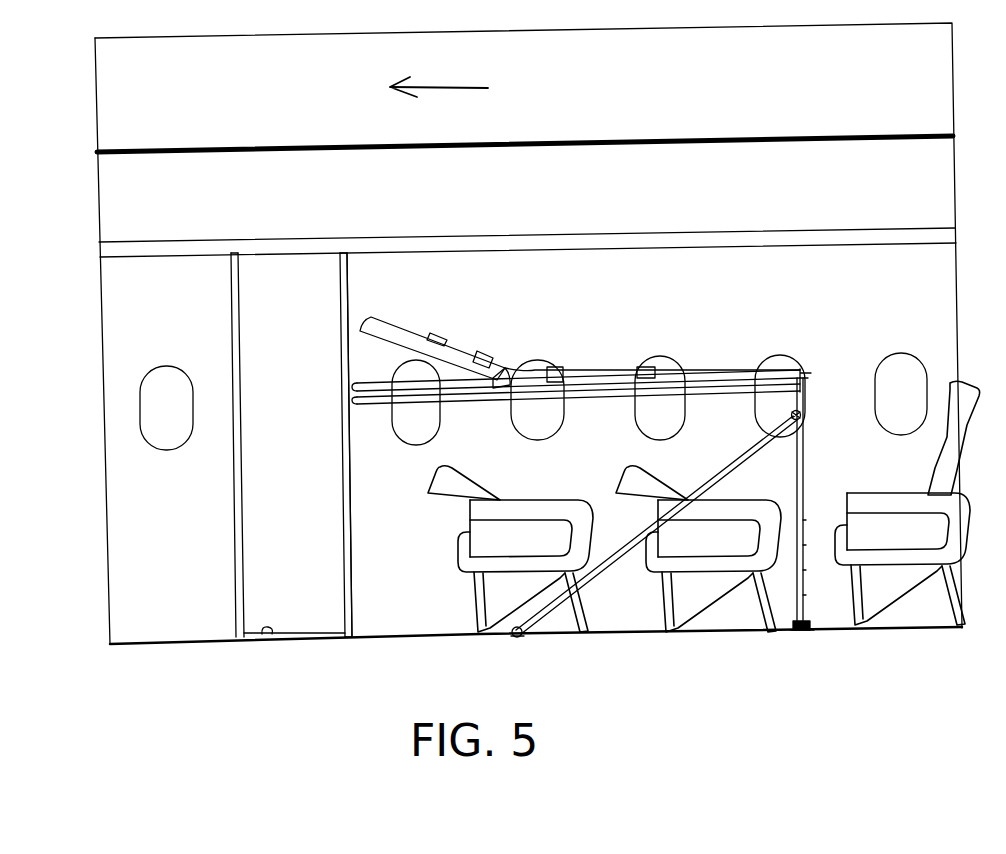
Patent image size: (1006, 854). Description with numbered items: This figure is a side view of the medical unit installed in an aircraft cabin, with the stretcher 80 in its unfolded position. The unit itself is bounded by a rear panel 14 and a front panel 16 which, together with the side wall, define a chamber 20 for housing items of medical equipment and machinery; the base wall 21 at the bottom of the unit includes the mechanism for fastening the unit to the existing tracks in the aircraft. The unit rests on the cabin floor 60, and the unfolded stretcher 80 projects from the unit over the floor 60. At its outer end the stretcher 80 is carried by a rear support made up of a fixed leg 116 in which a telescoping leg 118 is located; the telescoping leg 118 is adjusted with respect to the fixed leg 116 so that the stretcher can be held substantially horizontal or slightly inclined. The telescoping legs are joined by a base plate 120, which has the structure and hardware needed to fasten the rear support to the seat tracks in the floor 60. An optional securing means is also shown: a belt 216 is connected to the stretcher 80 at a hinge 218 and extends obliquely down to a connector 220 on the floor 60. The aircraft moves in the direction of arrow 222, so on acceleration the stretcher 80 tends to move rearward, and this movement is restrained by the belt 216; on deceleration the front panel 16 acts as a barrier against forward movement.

The rear panel 14 is at (240, 535).
The front panel 16 is at (350, 578).
The chamber 20 is at (262, 312).
The base wall 21 is at (263, 634).
The floor 60 is at (386, 643).
The stretcher 80 is at (584, 343).
The fixed leg 116 is at (803, 473).
The telescoping leg 118 is at (808, 612).
The base plate 120 is at (802, 630).
The belt 216 is at (600, 578).
The hinge 218 is at (803, 411).
The connector 220 is at (521, 636).
The arrow 222 is at (478, 80).